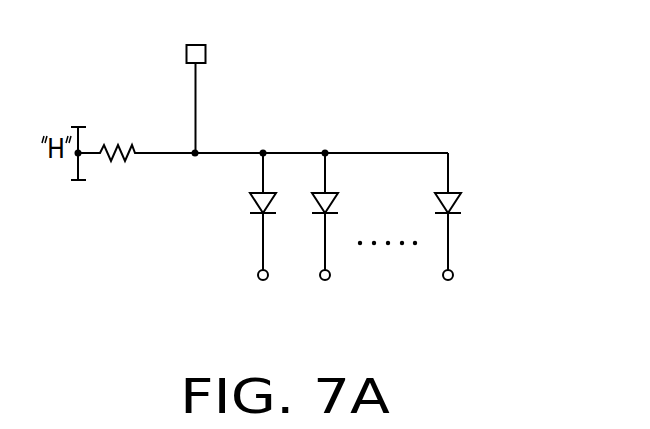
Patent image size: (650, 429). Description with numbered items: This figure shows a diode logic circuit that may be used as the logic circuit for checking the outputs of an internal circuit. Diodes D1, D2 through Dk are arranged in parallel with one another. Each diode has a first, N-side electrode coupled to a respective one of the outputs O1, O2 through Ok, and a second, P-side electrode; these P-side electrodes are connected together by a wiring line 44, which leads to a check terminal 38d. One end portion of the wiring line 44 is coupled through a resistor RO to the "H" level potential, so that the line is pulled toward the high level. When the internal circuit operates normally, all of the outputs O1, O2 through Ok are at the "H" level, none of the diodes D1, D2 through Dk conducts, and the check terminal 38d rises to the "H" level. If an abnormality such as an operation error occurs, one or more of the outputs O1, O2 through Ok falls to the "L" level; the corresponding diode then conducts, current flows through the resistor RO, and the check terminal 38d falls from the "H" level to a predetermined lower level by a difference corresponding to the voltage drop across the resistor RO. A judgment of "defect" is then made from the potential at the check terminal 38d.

The check terminal 38d is at (206, 52).
The wiring line 44 is at (378, 152).
The resistor RO is at (117, 145).
The diode D1 is at (254, 203).
The diode D2 is at (333, 200).
The diode Dk is at (457, 200).
The output O1 is at (263, 280).
The output O2 is at (325, 280).
The output Ok is at (448, 280).